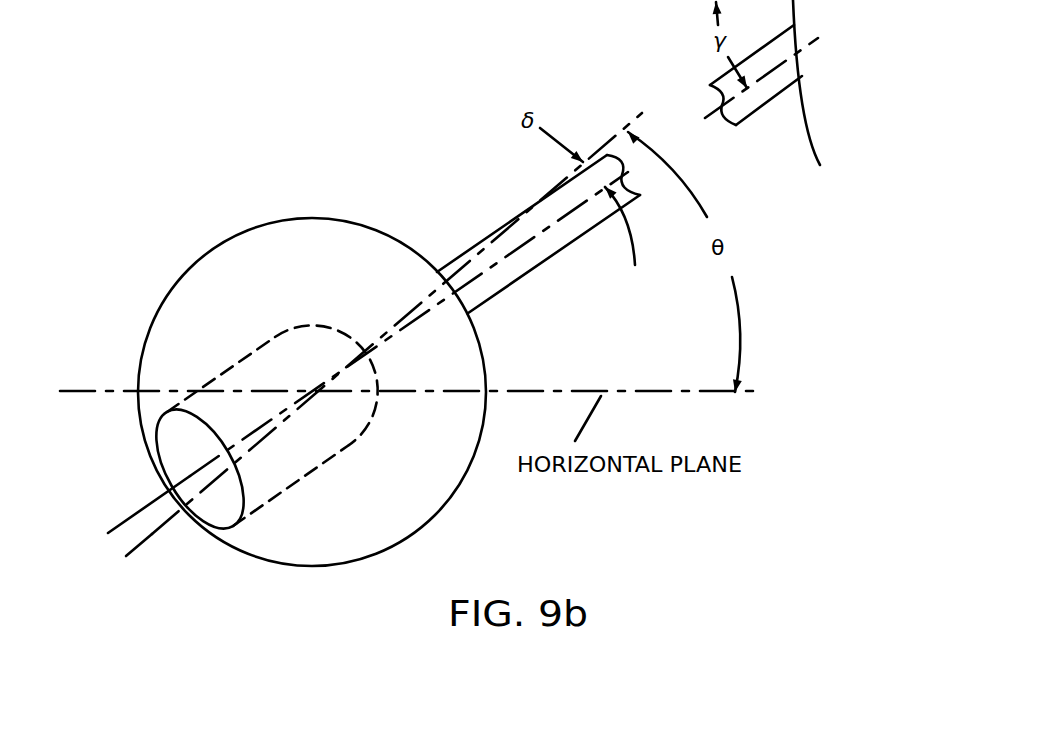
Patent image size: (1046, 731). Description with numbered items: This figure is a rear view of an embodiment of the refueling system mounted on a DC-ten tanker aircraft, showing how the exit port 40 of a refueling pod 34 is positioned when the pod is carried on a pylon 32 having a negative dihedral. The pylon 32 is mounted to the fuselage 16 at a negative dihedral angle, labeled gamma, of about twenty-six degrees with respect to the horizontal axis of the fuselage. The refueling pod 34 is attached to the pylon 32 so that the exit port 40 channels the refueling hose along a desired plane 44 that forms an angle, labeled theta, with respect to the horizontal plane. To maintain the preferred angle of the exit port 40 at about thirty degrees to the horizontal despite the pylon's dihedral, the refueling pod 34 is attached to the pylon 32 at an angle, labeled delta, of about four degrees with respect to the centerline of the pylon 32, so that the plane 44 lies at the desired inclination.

The fuselage 16 is at (822, 165).
The pylon 32 is at (473, 247).
The refueling pod 34 is at (293, 218).
The exit port 40 is at (200, 527).
The plane 44 is at (147, 538).